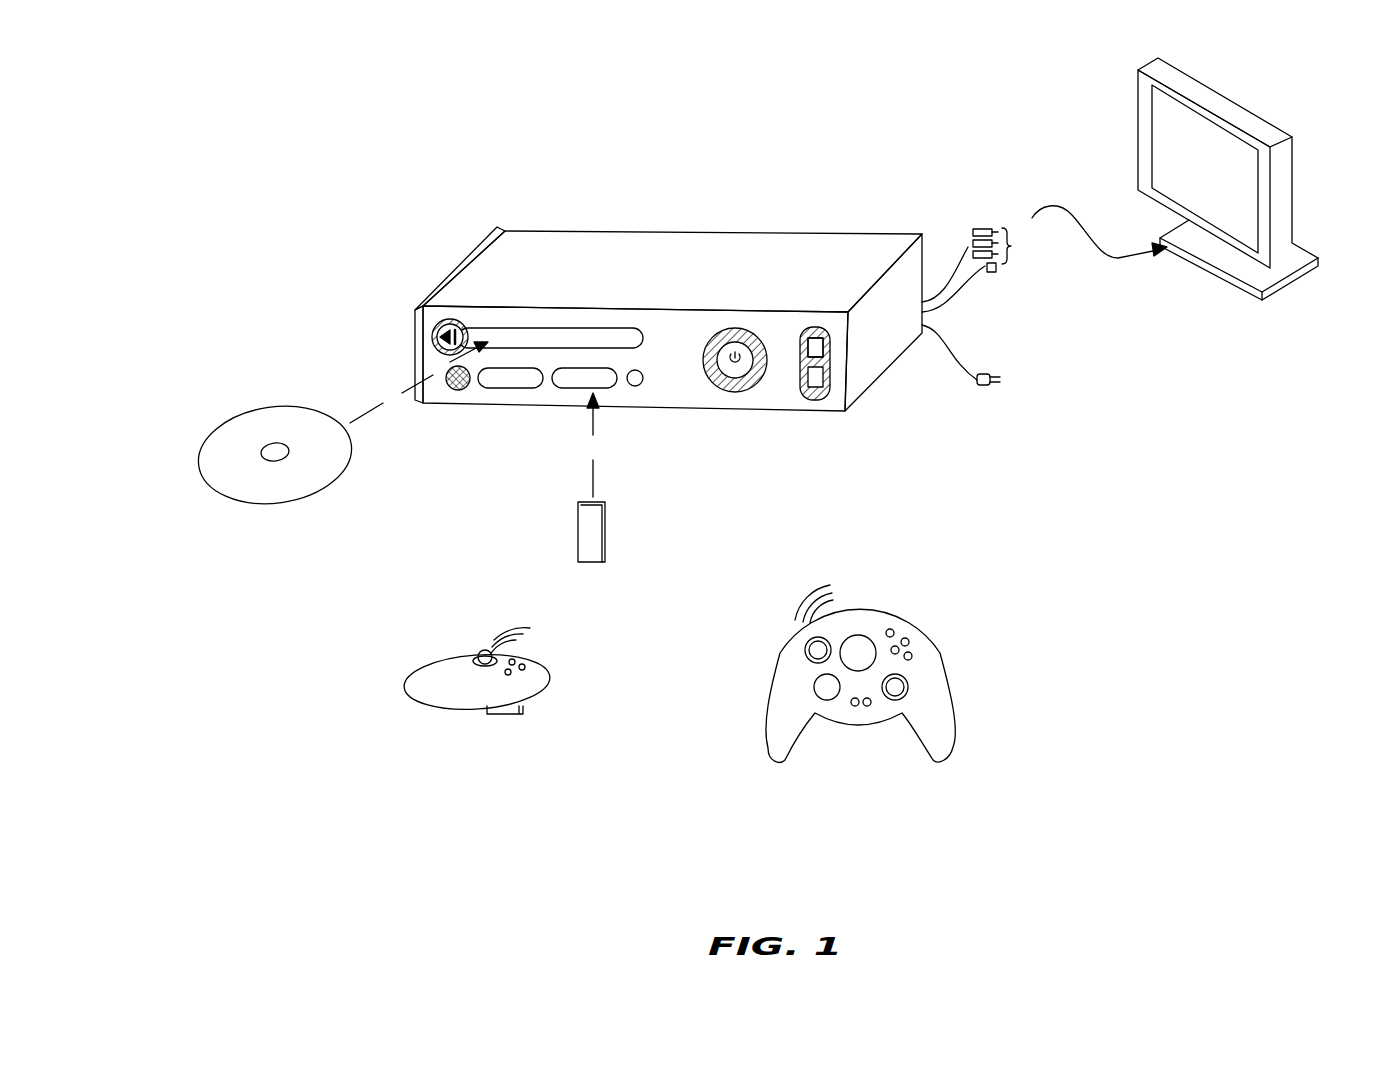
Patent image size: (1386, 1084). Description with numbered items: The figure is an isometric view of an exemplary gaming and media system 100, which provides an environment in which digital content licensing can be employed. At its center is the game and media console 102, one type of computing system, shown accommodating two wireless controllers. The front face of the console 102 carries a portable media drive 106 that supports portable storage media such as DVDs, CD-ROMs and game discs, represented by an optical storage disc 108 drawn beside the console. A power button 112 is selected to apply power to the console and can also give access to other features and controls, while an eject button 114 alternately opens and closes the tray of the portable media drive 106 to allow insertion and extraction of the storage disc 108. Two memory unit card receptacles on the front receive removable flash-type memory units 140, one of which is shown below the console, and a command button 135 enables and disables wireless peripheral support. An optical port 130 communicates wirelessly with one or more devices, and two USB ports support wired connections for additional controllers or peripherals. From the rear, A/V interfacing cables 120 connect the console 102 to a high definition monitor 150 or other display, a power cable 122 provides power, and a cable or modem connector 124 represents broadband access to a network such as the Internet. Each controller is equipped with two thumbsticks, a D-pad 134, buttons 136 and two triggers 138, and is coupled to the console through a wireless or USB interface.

The gaming and media system 100 is at (702, 192).
The game and media console 102 is at (542, 242).
The portable media drive 106 is at (562, 327).
The optical storage disc 108 is at (287, 500).
The power button 112 is at (740, 385).
The eject button 114 is at (436, 333).
The A/V interfacing cables 120 is at (976, 230).
The power cable 122 is at (981, 386).
The cable or modem connector 124 is at (991, 272).
The optical port 130 is at (456, 390).
The D-pad 134 is at (814, 687).
The command button 135 is at (635, 387).
The buttons 136 is at (909, 643).
The triggers 138 is at (521, 715).
The removable flash-type memory unit 140 is at (592, 562).
The high definition monitor 150 is at (1137, 135).